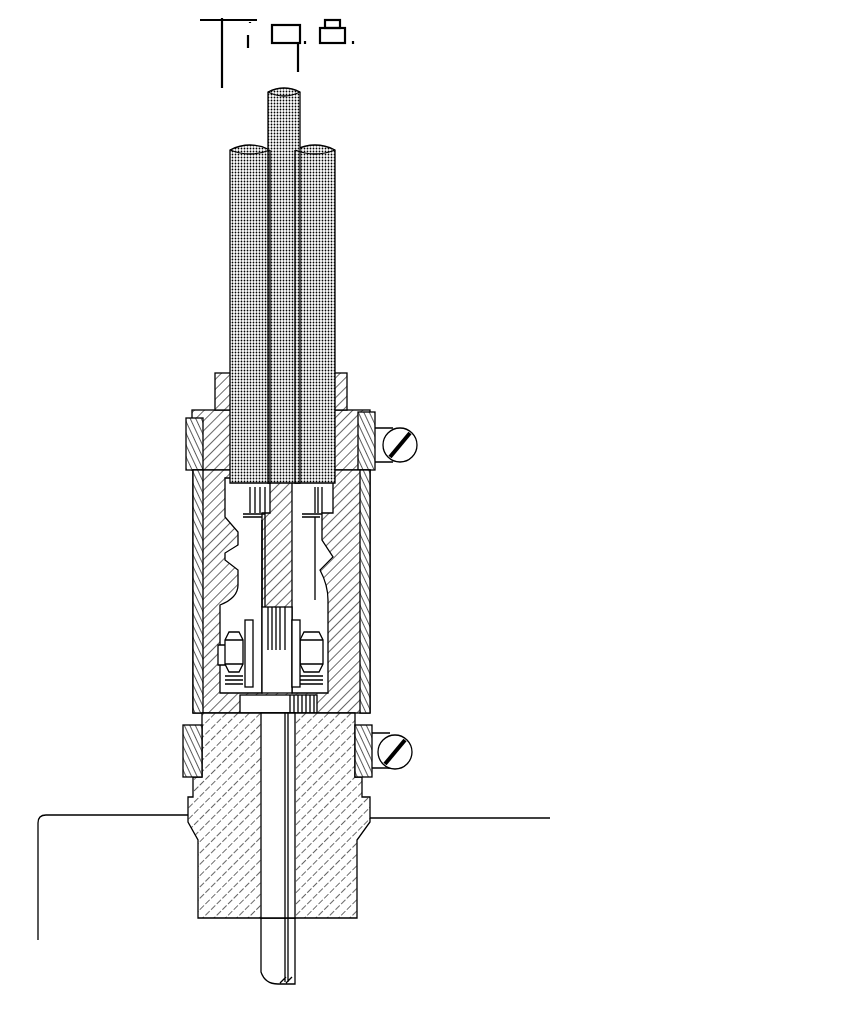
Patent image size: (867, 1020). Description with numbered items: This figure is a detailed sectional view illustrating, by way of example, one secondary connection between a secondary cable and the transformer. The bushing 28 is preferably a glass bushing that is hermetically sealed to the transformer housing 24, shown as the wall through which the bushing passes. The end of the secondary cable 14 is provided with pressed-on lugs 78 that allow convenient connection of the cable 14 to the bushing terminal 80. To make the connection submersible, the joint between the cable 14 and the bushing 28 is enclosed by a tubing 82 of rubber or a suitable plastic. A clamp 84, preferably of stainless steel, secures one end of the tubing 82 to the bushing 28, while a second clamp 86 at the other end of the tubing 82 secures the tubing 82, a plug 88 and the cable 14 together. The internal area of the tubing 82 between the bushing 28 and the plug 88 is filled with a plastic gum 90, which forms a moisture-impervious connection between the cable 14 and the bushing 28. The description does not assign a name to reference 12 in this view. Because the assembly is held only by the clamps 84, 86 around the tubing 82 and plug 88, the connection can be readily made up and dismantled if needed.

The secondary cable 14 is at (352, 230).
The plug 88 is at (347, 378).
The second clamp 86 is at (377, 428).
The pressed-on lug 78 is at (263, 543).
The tubing 82 is at (370, 593).
The plastic gum 90 is at (347, 620).
The bushing terminal 80 is at (280, 660).
The clamp 84 is at (373, 733).
The transformer housing 24 is at (121, 813).
The panel wall 12 is at (459, 814).
The bushing 28 is at (374, 851).